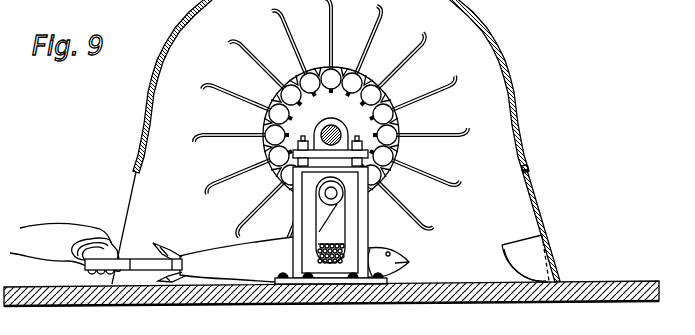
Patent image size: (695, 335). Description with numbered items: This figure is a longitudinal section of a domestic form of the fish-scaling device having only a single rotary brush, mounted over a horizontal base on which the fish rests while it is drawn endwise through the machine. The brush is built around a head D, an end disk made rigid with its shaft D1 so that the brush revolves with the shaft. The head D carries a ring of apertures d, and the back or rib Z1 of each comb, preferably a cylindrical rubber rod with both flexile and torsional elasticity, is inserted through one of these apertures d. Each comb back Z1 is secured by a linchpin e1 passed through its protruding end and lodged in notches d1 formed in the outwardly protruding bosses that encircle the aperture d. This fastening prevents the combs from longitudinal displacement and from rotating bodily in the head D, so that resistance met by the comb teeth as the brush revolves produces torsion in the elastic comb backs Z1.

The head D is at (331, 135).
The shaft D1 is at (339, 136).
The aperture d is at (271, 105).
The notch d1 is at (306, 72).
The linchpin e1 is at (285, 91).
The comb back Z1 is at (378, 99).